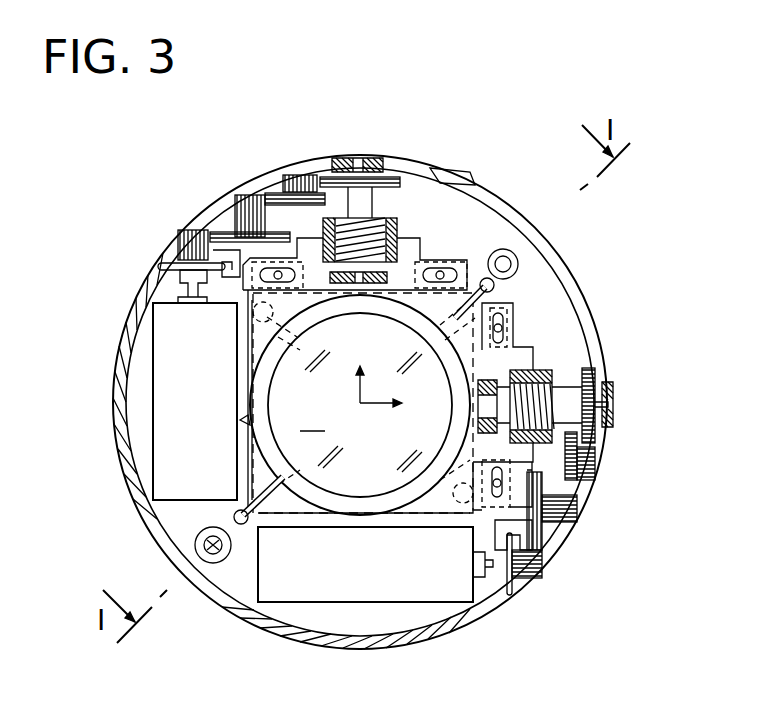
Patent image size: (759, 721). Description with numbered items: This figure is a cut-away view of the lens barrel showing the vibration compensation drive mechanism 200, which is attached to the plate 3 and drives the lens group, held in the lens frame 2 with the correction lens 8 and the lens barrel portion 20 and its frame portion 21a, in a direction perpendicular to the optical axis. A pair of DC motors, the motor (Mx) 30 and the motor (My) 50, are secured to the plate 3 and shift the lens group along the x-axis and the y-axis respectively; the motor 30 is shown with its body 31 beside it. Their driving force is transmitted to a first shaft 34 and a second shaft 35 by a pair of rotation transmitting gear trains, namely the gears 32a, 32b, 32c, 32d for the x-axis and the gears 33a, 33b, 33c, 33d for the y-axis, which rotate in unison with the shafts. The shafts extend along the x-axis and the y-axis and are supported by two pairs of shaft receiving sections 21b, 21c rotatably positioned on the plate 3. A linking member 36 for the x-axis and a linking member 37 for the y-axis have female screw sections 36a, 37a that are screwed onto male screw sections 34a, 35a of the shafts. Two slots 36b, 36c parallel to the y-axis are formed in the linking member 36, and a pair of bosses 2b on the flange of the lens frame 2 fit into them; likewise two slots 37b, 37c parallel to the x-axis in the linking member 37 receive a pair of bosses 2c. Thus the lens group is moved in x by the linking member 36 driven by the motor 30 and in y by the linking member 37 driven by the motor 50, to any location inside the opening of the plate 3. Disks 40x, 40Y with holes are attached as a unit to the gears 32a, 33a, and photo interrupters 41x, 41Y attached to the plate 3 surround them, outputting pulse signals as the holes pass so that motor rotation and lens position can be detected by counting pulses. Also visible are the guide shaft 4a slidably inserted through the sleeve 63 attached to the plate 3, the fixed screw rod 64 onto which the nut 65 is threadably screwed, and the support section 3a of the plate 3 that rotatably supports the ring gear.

The vibration compensation drive mechanism 200 is at (318, 80).
The lens barrel unit 20 is at (416, 148).
The lens holding frame portion 21a is at (237, 428).
The shaft receiving section 21b is at (358, 157).
The shaft receiving section 21c is at (388, 389).
The correction lens 8 is at (360, 405).
The lens frame 2 is at (318, 487).
The bosses 2b is at (480, 503).
The bosses 2c is at (276, 274).
The plate 3 is at (555, 293).
The support section 3a is at (240, 307).
The guide shaft 4a is at (508, 263).
The DC motor (Mx) 30 is at (350, 590).
The y-direction motor My 31 is at (167, 480).
The gear 32a is at (530, 560).
The gear 32b is at (578, 512).
The gear 32c is at (580, 463).
The gear 32d is at (583, 360).
The gear 33a is at (178, 240).
The gear 33b is at (212, 230).
The gear 33c is at (277, 185).
The gear 33d is at (318, 176).
The first shaft 34 is at (572, 437).
The male screw section 34a is at (597, 378).
The second shaft 35 is at (370, 203).
The male screw section 35a is at (353, 228).
The linking member 36 is at (515, 375).
The female screw section 36a is at (577, 492).
The slot 36b is at (505, 305).
The slot 36c is at (497, 485).
The linking member 37 is at (408, 240).
The female screw section 37a is at (425, 172).
The slot 37b is at (268, 275).
The slot 37c is at (452, 268).
The disk 40Y is at (165, 266).
The photo interrupter 41Y is at (200, 272).
The disk 40x is at (510, 590).
The photo interrupter 41x is at (520, 525).
The DC motor (My) 50 is at (163, 412).
The sleeve 63 is at (517, 257).
The screw rod 64 is at (207, 543).
The nut 65 is at (213, 562).